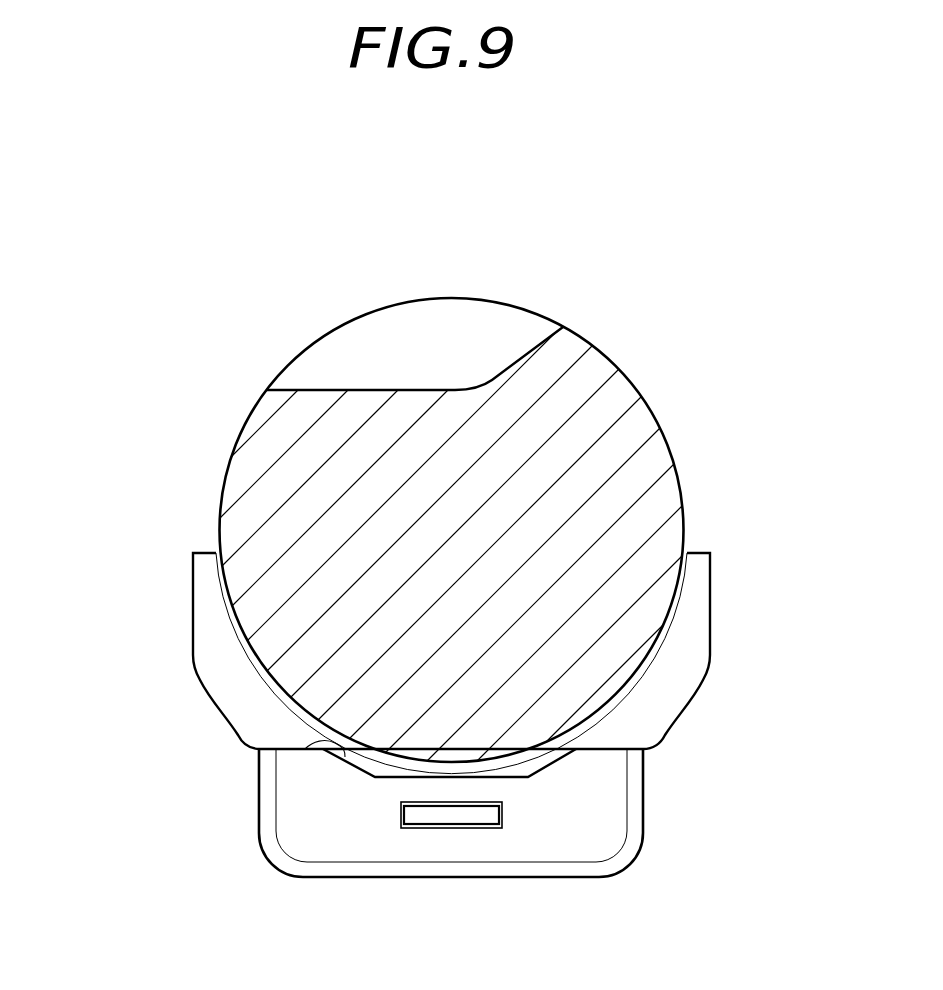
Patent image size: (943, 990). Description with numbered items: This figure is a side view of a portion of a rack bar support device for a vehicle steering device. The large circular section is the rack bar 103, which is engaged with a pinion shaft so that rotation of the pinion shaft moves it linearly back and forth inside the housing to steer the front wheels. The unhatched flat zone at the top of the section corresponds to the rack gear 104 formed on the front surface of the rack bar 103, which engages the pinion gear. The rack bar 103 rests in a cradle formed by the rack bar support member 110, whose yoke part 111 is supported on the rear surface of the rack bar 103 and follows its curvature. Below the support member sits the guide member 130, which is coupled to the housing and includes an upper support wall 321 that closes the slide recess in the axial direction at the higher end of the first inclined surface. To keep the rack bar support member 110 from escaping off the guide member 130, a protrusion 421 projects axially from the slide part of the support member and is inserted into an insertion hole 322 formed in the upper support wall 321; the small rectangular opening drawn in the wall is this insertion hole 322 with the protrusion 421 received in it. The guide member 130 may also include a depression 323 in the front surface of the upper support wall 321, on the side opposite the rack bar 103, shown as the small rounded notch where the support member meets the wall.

The rack bar 103 is at (588, 380).
The rack gear 104 is at (408, 327).
The rack bar support member 110 is at (383, 665).
The yoke part 111 is at (208, 612).
The guide member 130 is at (451, 848).
The upper support wall 321 is at (358, 850).
The insertion hole 322 is at (451, 828).
The depression 323 is at (305, 748).
The protrusion 421 is at (472, 817).